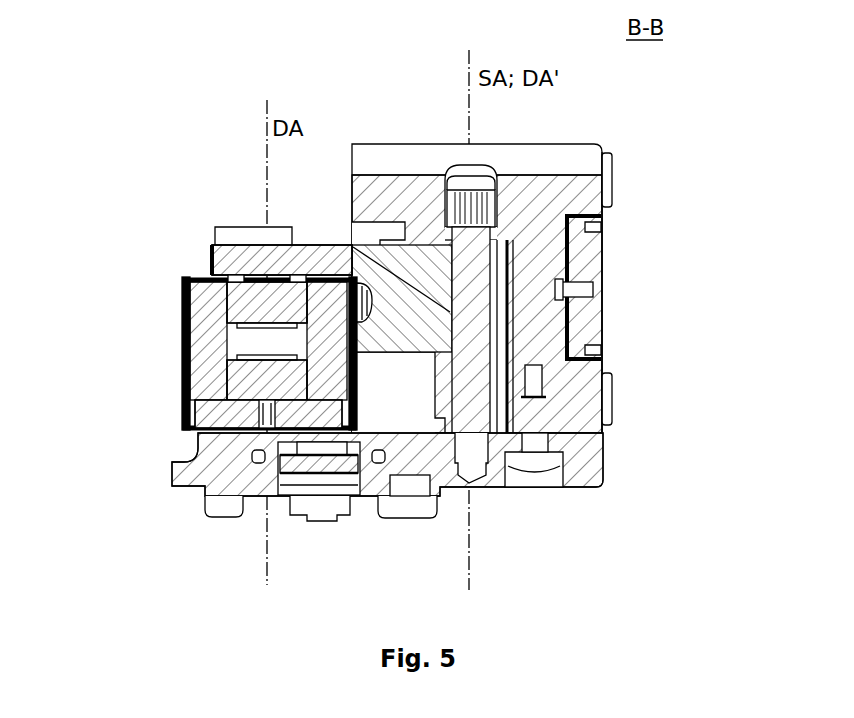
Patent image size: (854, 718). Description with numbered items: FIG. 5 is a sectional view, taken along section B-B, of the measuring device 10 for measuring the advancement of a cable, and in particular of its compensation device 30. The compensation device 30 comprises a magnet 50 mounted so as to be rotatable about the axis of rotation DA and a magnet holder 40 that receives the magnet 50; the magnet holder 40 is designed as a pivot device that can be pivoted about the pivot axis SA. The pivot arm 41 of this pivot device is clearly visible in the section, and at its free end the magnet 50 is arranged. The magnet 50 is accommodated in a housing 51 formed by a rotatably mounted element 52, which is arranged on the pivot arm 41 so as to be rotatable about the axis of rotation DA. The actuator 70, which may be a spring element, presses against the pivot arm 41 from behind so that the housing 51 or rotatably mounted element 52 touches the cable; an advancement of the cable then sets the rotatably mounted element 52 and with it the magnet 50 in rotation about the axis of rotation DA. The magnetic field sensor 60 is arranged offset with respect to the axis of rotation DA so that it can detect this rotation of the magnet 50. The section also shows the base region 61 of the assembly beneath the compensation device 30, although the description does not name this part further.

The measuring device 10 is at (161, 77).
The compensation device 30 is at (647, 227).
The magnet holder 40 is at (400, 319).
The pivot arm 41 is at (260, 257).
The magnet 50 is at (210, 413).
The housing 51 is at (170, 311).
The rotatably mounted element 52 is at (269, 353).
The magnetic field sensor 60 is at (327, 463).
The base plate 61 is at (286, 454).
The actuator 70 is at (360, 288).